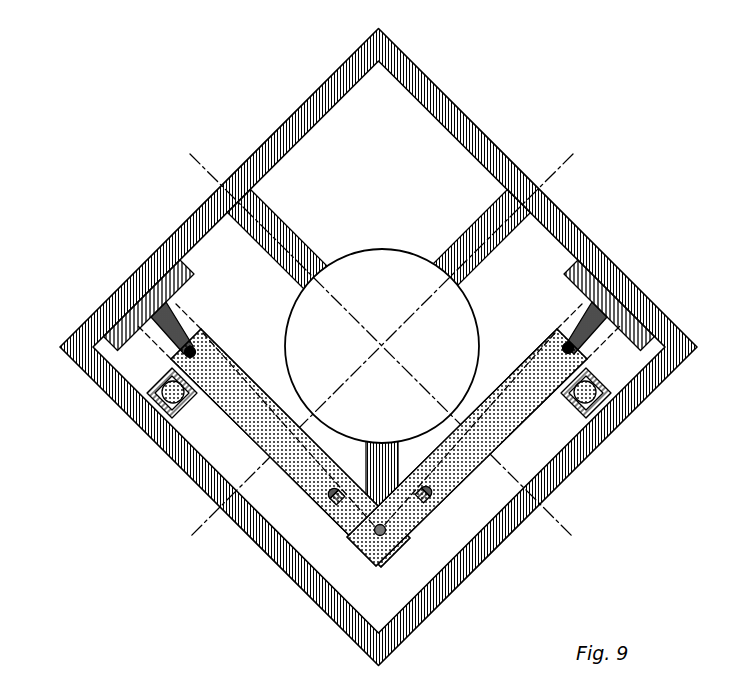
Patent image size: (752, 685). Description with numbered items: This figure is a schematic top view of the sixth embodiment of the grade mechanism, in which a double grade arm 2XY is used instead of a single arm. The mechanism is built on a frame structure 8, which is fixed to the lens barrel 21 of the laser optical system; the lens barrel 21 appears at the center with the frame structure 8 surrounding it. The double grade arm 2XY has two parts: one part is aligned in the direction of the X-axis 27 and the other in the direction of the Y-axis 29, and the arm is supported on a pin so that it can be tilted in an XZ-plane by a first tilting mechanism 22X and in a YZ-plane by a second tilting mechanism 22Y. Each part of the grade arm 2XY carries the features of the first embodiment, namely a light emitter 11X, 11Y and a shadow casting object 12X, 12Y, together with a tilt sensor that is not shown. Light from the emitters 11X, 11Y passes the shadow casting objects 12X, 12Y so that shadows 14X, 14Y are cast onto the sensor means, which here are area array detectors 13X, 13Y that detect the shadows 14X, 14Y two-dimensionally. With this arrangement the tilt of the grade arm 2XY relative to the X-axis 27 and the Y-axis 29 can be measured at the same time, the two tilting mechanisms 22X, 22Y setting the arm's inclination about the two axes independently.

The frame structure 8 is at (247, 173).
The lens barrel 21 is at (384, 312).
The shadow casting object 12X is at (568, 343).
The shadow casting object 12Y is at (190, 347).
The area array detector 13X is at (621, 337).
The area array detector 13Y is at (133, 297).
The shadow 14X is at (609, 308).
The shadow 14Y is at (163, 303).
The first tilting mechanism 22X is at (598, 415).
The second tilting mechanism 22Y is at (153, 405).
The X-axis 27 is at (212, 530).
The Y-axis 29 is at (566, 527).
The light emitter 11X is at (428, 500).
The light emitter 11Y is at (330, 502).
The double grade arm 2XY is at (380, 568).